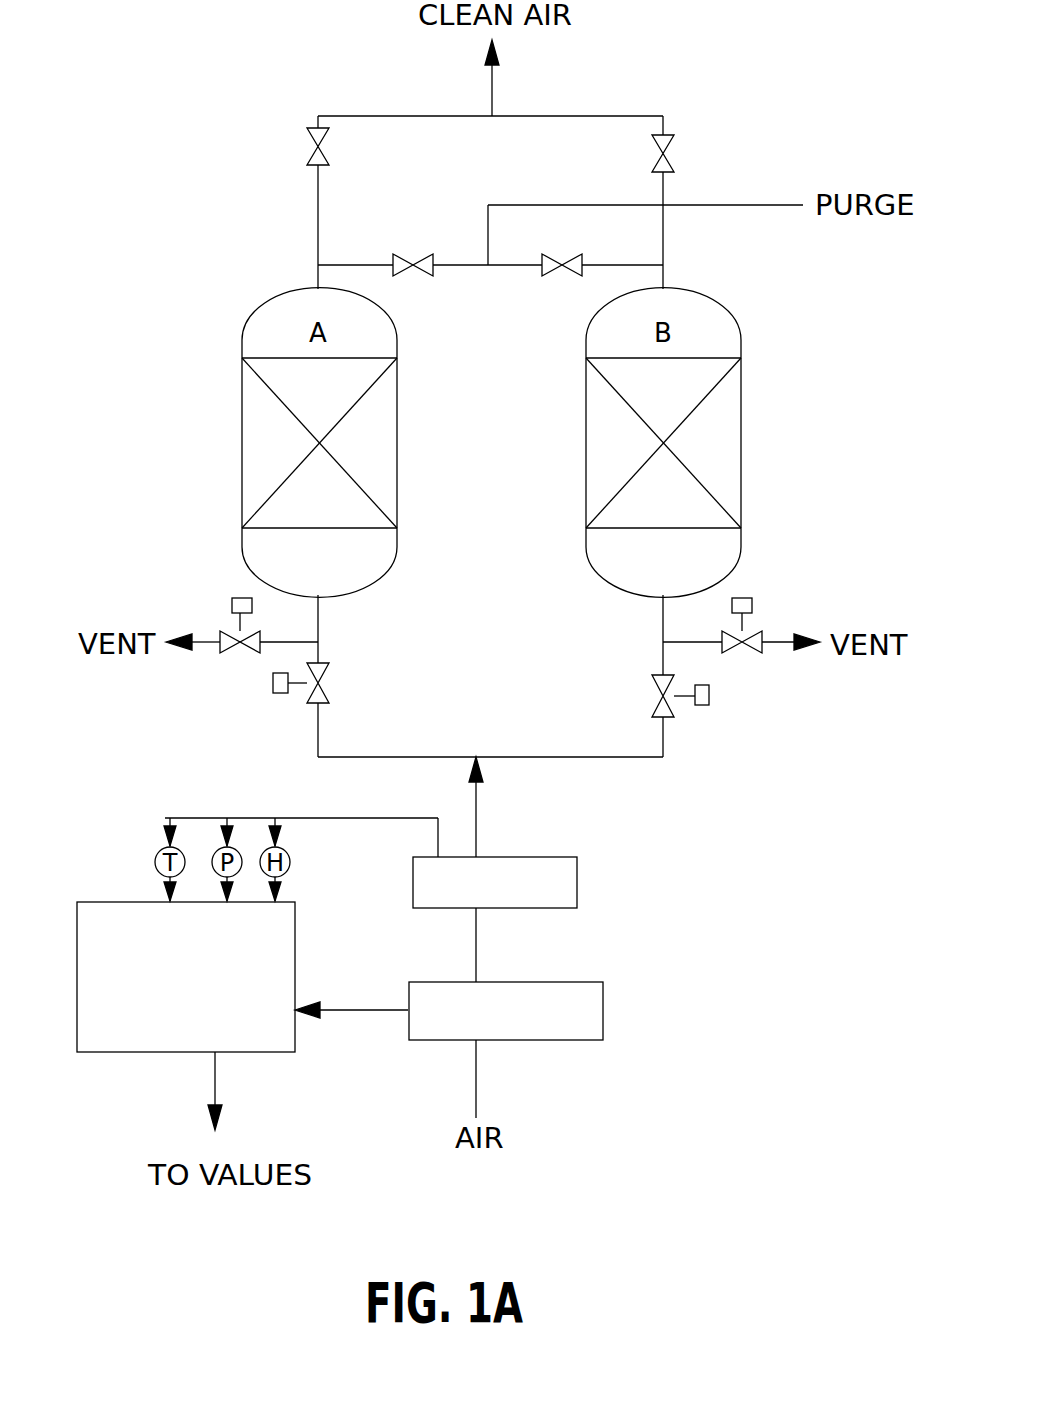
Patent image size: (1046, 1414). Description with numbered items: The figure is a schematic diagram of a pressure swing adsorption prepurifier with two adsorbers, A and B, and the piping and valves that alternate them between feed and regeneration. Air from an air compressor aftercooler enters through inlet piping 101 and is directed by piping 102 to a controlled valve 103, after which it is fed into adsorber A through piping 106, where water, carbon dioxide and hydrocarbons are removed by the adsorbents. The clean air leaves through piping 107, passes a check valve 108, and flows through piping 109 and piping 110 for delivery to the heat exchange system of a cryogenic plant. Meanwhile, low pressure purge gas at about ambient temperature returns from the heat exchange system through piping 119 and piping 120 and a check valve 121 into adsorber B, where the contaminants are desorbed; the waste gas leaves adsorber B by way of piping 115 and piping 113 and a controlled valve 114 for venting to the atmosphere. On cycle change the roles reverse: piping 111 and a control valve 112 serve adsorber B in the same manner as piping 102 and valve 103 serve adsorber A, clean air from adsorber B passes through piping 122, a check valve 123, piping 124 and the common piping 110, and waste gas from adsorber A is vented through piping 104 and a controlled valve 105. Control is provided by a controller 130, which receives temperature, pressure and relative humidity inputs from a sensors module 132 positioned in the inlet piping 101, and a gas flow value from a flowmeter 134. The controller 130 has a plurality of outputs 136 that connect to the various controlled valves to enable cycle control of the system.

The piping 101 is at (476, 795).
The piping 102 is at (352, 757).
The controlled valve 103 is at (307, 684).
The piping 104 is at (318, 642).
The controlled valve 105 is at (232, 611).
The piping 106 is at (318, 640).
The piping 107 is at (318, 245).
The check valve 108 is at (308, 160).
The piping 109 is at (398, 116).
The piping 110 is at (492, 84).
The piping 111 is at (654, 757).
The control valve 112 is at (672, 688).
The piping 113 is at (722, 642).
The controlled valve 114 is at (752, 625).
The piping 115 is at (663, 638).
The piping 119 is at (746, 205).
The piping 120 is at (472, 265).
The check valve 121 is at (562, 276).
The piping 122 is at (665, 270).
The check valve 123 is at (655, 165).
The piping 124 is at (632, 116).
The controller 130 is at (118, 1053).
The sensors module 132 is at (577, 884).
The flowmeter 134 is at (604, 1012).
The outputs 136 is at (218, 1066).